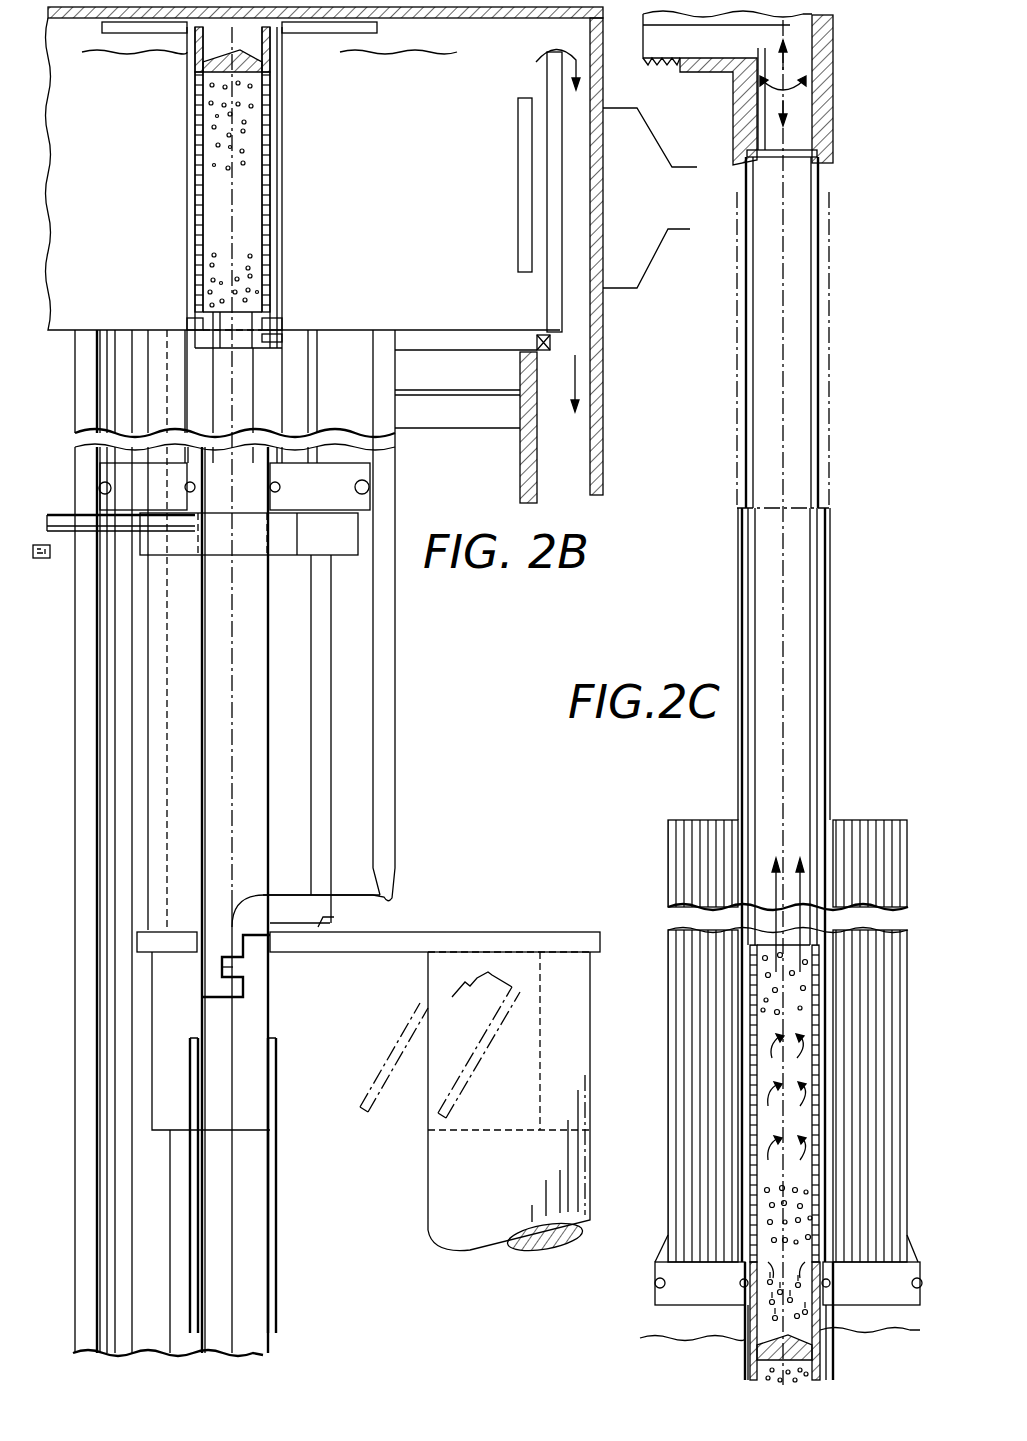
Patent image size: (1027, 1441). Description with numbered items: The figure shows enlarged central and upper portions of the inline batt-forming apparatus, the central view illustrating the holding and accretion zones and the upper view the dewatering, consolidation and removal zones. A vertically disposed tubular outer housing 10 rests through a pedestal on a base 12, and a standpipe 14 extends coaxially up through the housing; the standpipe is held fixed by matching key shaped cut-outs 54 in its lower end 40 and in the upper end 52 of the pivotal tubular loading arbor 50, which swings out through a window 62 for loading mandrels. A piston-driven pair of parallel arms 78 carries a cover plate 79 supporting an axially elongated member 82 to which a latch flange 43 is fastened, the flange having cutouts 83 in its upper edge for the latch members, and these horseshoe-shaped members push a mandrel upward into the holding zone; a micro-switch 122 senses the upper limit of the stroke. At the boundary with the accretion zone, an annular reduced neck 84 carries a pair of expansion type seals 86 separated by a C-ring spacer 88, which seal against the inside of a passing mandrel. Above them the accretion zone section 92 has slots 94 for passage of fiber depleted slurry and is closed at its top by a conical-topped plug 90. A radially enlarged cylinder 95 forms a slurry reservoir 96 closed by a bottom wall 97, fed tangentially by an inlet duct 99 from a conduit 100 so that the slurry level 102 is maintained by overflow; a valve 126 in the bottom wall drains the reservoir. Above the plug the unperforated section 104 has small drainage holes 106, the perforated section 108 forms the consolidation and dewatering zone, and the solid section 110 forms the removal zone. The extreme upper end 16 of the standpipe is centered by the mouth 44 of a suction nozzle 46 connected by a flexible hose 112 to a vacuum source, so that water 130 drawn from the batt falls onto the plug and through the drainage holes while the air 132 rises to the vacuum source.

In FIG. 2B, the tubular outer housing 10 is at (77, 725).
In FIG. 2C, the base 12 is at (650, 62).
In FIG. 2B, the standpipe 14 is at (243, 754).
In FIG. 2C, the standpipe 14 is at (802, 364).
In FIG. 2C, the extreme upper end of the standpipe 16 is at (815, 157).
In FIG. 2B, the lower end of the standpipe 40 is at (222, 998).
In FIG. 2B, the latch flange 43 is at (340, 553).
In FIG. 2C, the mouth of the suction nozzle 44 is at (823, 128).
In FIG. 2C, the suction nozzle 46 is at (753, 42).
In FIG. 2B, the tubular loading arbor 50 is at (437, 1072).
In FIG. 2B, the upper end of the loading arbor 52 is at (490, 975).
In FIG. 2B, the key shaped cut-outs 54 is at (233, 968).
In FIG. 2B, the window 62 is at (390, 900).
In FIG. 2B, the parallel arms 78 is at (400, 932).
In FIG. 2B, the cover plate 79 is at (335, 917).
In FIG. 2B, the axially elongated member 82 is at (318, 744).
In FIG. 2B, the cutouts 83 is at (137, 540).
In FIG. 2B, the annular reduced neck 84 is at (270, 312).
In FIG. 2B, the expansion type seals 86 is at (283, 320).
In FIG. 2B, the C-ring spacer 88 is at (195, 325).
In FIG. 2B, the plug 90 is at (263, 63).
In FIG. 2C, the plug 90 is at (812, 1358).
In FIG. 2B, the standpipe section in the accretion zone 92 is at (190, 187).
In FIG. 2B, the slots 94 is at (268, 222).
In FIG. 2B, the radially enlarged cylinder 95 is at (604, 383).
In FIG. 2B, the slurry reservoir 96 is at (432, 112).
In FIG. 2B, the bottom wall 97 is at (515, 330).
In FIG. 2B, the inlet duct 99 is at (518, 160).
In FIG. 2C, the conduit 100 is at (683, 229).
In FIG. 2B, the level of slurry 102 is at (418, 53).
In FIG. 2C, the standpipe section in the air-liquid separator zone 104 is at (745, 1317).
In FIG. 2B, the drainage holes 106 is at (200, 60).
In FIG. 2C, the drainage holes 106 is at (760, 1358).
In FIG. 2C, the standpipe section in the consolidation and dewatering zone 108 is at (818, 1065).
In FIG. 2C, the standpipe section in the removal zone 110 is at (815, 697).
In FIG. 2B, the flexible hose 112 is at (60, 512).
In FIG. 2B, the micro-switch 122 is at (42, 560).
In FIG. 2B, the valve 126 is at (558, 373).
In FIG. 2C, the arrows indicating falling water 130 is at (805, 1268).
In FIG. 2C, the air 132 is at (790, 1095).